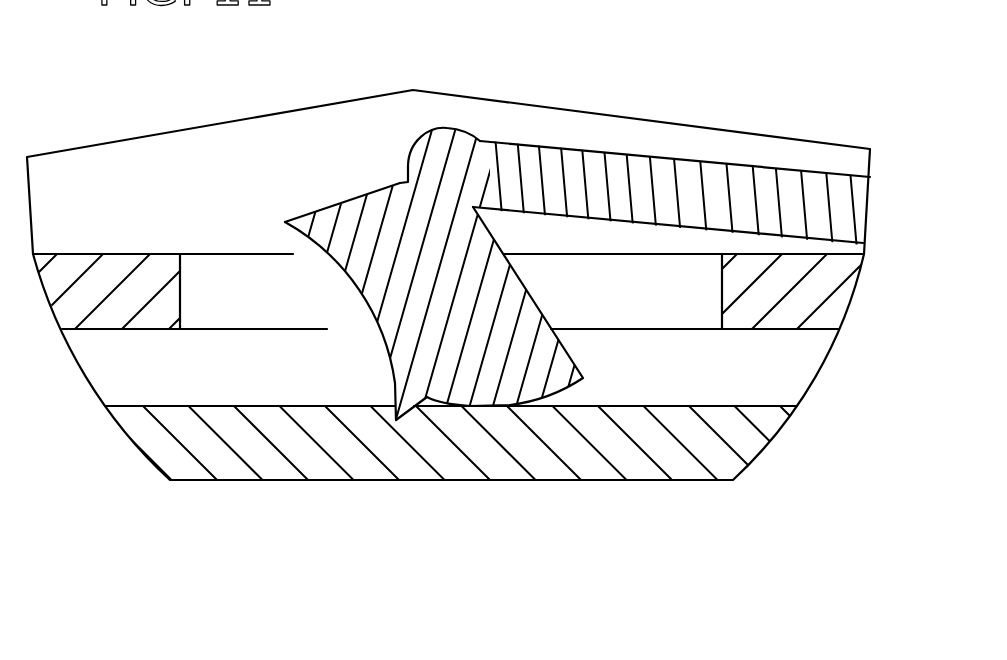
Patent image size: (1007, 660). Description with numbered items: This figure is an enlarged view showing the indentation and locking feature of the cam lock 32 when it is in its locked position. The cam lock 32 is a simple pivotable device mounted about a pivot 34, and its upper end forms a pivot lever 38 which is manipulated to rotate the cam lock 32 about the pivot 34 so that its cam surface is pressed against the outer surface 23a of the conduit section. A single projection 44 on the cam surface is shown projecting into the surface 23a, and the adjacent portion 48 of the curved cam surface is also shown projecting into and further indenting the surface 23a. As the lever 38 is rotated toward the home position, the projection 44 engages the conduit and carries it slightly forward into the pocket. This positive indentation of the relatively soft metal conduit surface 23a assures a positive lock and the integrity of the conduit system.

The cam lock 32 is at (745, 80).
The pivot 34 is at (450, 170).
The pivot lever 38 is at (611, 174).
The projection 44 is at (420, 398).
The portion of the curved cam surface 48 is at (490, 417).
The outer surface of conduit section 23a is at (632, 405).